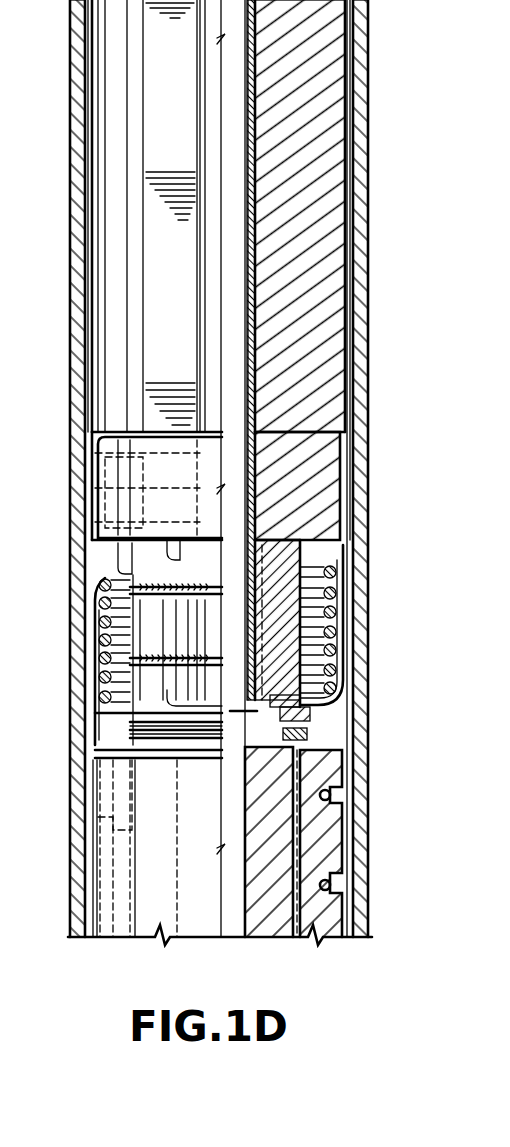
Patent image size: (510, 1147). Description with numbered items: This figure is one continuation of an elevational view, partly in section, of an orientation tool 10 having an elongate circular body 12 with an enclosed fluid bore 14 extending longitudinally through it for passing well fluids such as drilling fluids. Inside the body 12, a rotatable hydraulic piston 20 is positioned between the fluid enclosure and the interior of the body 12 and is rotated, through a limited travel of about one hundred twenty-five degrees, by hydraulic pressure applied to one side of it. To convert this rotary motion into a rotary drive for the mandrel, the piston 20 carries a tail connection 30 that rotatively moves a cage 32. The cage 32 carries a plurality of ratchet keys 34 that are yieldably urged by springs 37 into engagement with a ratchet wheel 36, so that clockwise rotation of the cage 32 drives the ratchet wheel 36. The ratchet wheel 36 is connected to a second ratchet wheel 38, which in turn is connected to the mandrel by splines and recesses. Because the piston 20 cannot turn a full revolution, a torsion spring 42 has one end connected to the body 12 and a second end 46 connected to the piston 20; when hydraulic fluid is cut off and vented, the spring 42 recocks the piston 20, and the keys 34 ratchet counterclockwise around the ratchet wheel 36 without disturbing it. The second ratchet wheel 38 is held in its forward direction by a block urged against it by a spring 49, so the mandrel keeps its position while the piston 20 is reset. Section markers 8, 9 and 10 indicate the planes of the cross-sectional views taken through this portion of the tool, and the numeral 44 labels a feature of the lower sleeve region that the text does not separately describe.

The section line 8- 8 is at (57, 78).
The section line 9- 9 is at (57, 590).
The orientation tool 10 is at (27, 763).
The elongate circular body 12 is at (368, 220).
The enclosed fluid bore 14 is at (232, 162).
The rotatable hydraulic piston 20 is at (322, 300).
The tail connection 30 is at (200, 482).
The cage 32 is at (323, 462).
The ratchet keys 34 is at (100, 645).
The ratchet wheel 36 is at (345, 716).
The springs 37 is at (100, 690).
The second ratchet wheel 38 is at (270, 798).
The torsion spring 42 is at (340, 613).
The lower sleeve 44 is at (110, 812).
The second end 46 is at (95, 452).
The spring 49 is at (340, 886).